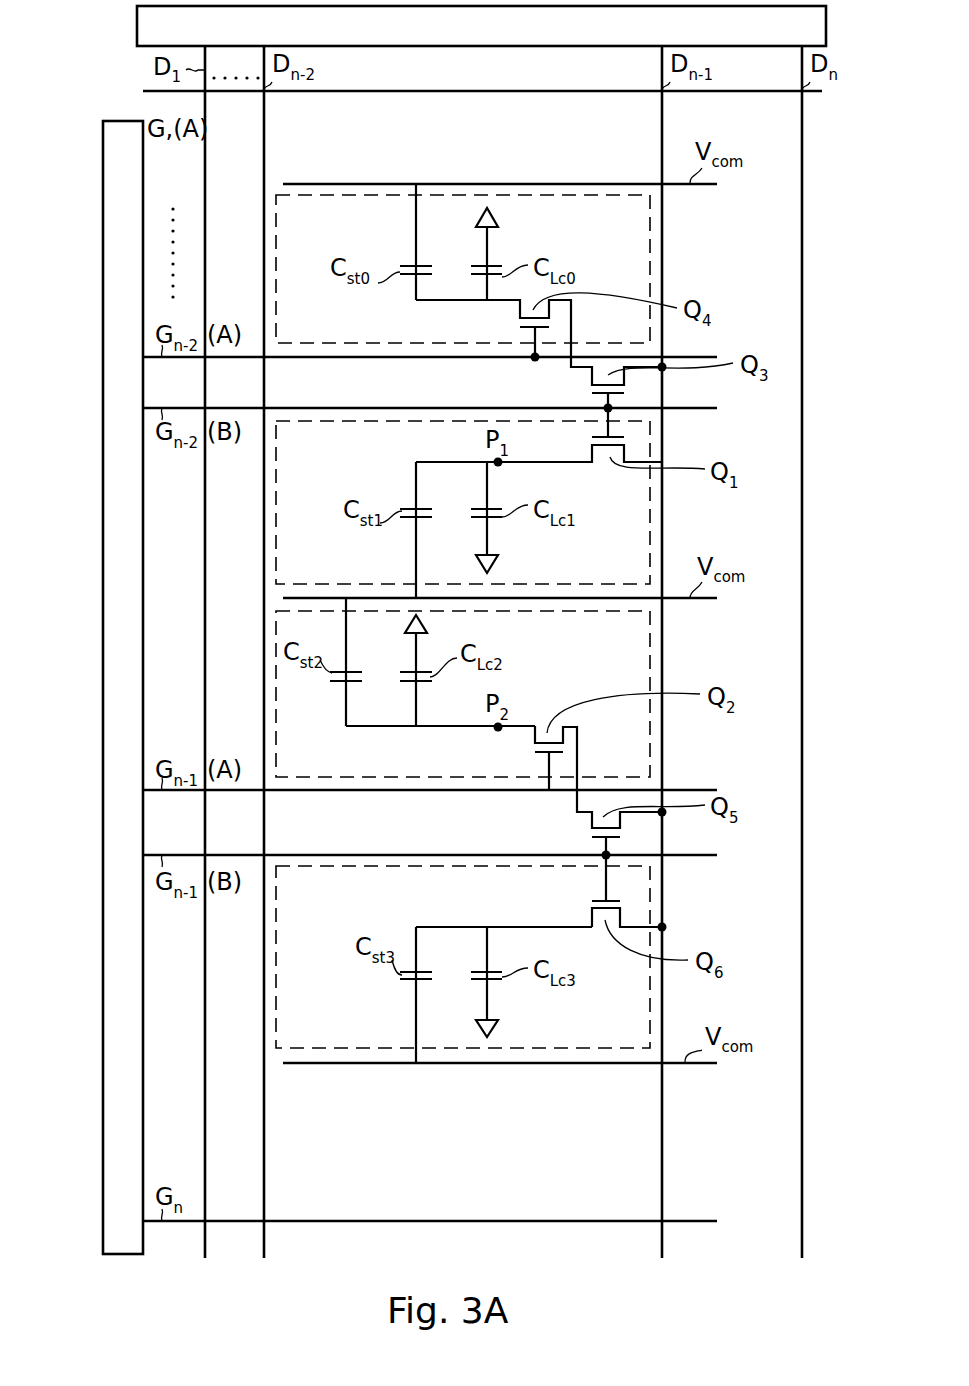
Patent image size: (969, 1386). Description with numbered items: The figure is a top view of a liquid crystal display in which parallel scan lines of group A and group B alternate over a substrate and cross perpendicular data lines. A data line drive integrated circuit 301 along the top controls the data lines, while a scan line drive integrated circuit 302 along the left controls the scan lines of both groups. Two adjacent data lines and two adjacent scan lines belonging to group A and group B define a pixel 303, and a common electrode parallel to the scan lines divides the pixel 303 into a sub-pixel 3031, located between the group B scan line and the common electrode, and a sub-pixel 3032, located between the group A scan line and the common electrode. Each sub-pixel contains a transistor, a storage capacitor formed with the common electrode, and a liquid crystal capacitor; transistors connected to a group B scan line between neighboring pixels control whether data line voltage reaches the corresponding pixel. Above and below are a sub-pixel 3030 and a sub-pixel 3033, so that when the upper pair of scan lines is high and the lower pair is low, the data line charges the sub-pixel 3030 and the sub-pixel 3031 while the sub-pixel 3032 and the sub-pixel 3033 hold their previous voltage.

The data line drive integrated circuit 301 is at (155, 25).
The scan line drive integrated circuit 302 is at (123, 128).
The pixel 303 is at (768, 413).
The sub-pixel 3030 is at (652, 258).
The sub-pixel 3031 is at (652, 437).
The sub-pixel 3032 is at (652, 660).
The sub-pixel 3033 is at (652, 900).